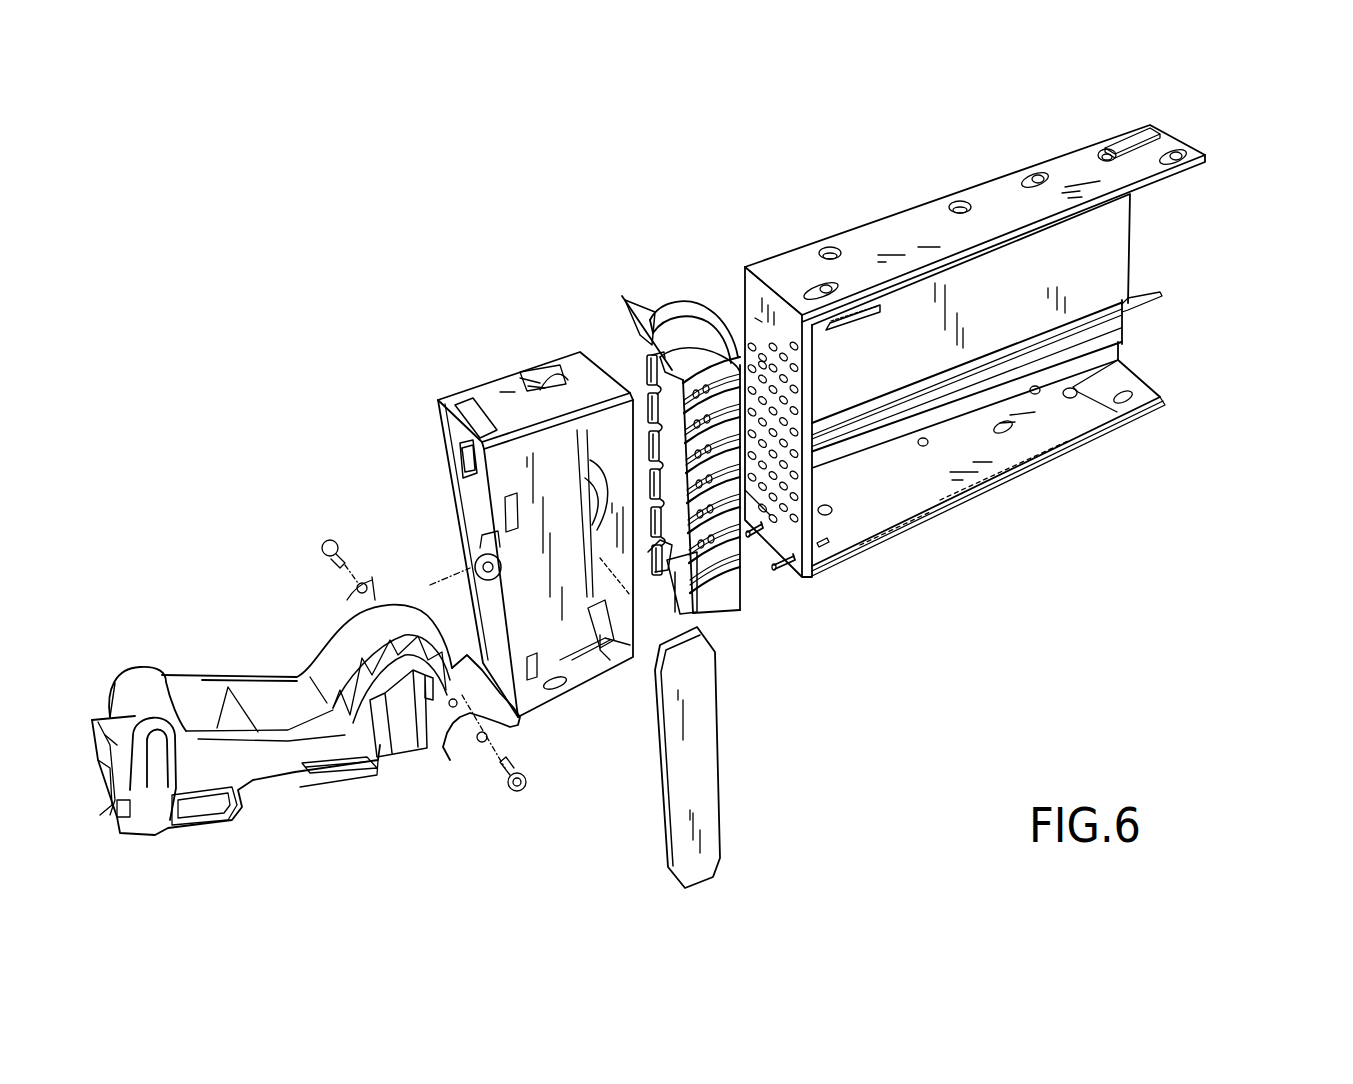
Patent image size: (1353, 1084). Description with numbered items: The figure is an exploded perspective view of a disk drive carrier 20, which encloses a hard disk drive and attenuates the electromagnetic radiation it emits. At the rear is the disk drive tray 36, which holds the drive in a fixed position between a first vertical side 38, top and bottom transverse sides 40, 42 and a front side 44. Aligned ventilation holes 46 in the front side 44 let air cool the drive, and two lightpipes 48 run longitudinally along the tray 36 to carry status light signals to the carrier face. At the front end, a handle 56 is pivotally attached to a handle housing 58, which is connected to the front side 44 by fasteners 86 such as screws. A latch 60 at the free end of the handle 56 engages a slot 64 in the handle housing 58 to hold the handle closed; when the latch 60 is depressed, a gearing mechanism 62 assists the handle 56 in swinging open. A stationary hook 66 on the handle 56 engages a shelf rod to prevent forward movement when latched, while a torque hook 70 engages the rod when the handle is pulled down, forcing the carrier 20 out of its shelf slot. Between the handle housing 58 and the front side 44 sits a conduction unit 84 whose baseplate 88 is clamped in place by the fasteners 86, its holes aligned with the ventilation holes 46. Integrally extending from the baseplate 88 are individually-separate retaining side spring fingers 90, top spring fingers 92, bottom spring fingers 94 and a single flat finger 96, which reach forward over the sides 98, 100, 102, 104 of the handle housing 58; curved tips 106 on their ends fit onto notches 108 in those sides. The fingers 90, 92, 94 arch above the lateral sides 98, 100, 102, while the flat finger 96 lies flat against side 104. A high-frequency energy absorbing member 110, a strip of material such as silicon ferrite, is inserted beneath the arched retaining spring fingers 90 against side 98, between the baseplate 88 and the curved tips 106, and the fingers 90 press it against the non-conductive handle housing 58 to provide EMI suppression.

The disk drive carrier 20 is at (1218, 130).
The disk drive tray 36 is at (995, 183).
The first vertical side 38 is at (1134, 246).
The top transverse side 40 is at (910, 214).
The bottom transverse side 42 is at (932, 508).
The front side 44 is at (780, 312).
The ventilation holes 46 is at (803, 382).
The lightpipes 48 is at (1160, 295).
The handle 56 is at (165, 838).
The handle housing 58 is at (510, 370).
The latch 60 is at (112, 718).
The gearing mechanism 62 is at (472, 567).
The slot 64 is at (470, 404).
The stationary hook 66 is at (512, 724).
The torque hook 70 is at (452, 745).
The conduction unit 84 is at (684, 438).
The fasteners 86 is at (875, 312).
The baseplate 88 is at (724, 362).
The retaining side spring fingers 90 is at (737, 604).
The top spring fingers 92 is at (640, 322).
The bottom spring fingers 94 is at (677, 598).
The flat finger 96 is at (660, 564).
The side of handle housing 98 is at (590, 690).
The side of handle housing 100 is at (458, 446).
The side of handle housing 102 is at (482, 650).
The side of handle housing 104 is at (470, 512).
The curved tips 106 is at (647, 372).
The notches 108 is at (540, 378).
The high-frequency energy absorbing member 110 is at (720, 734).